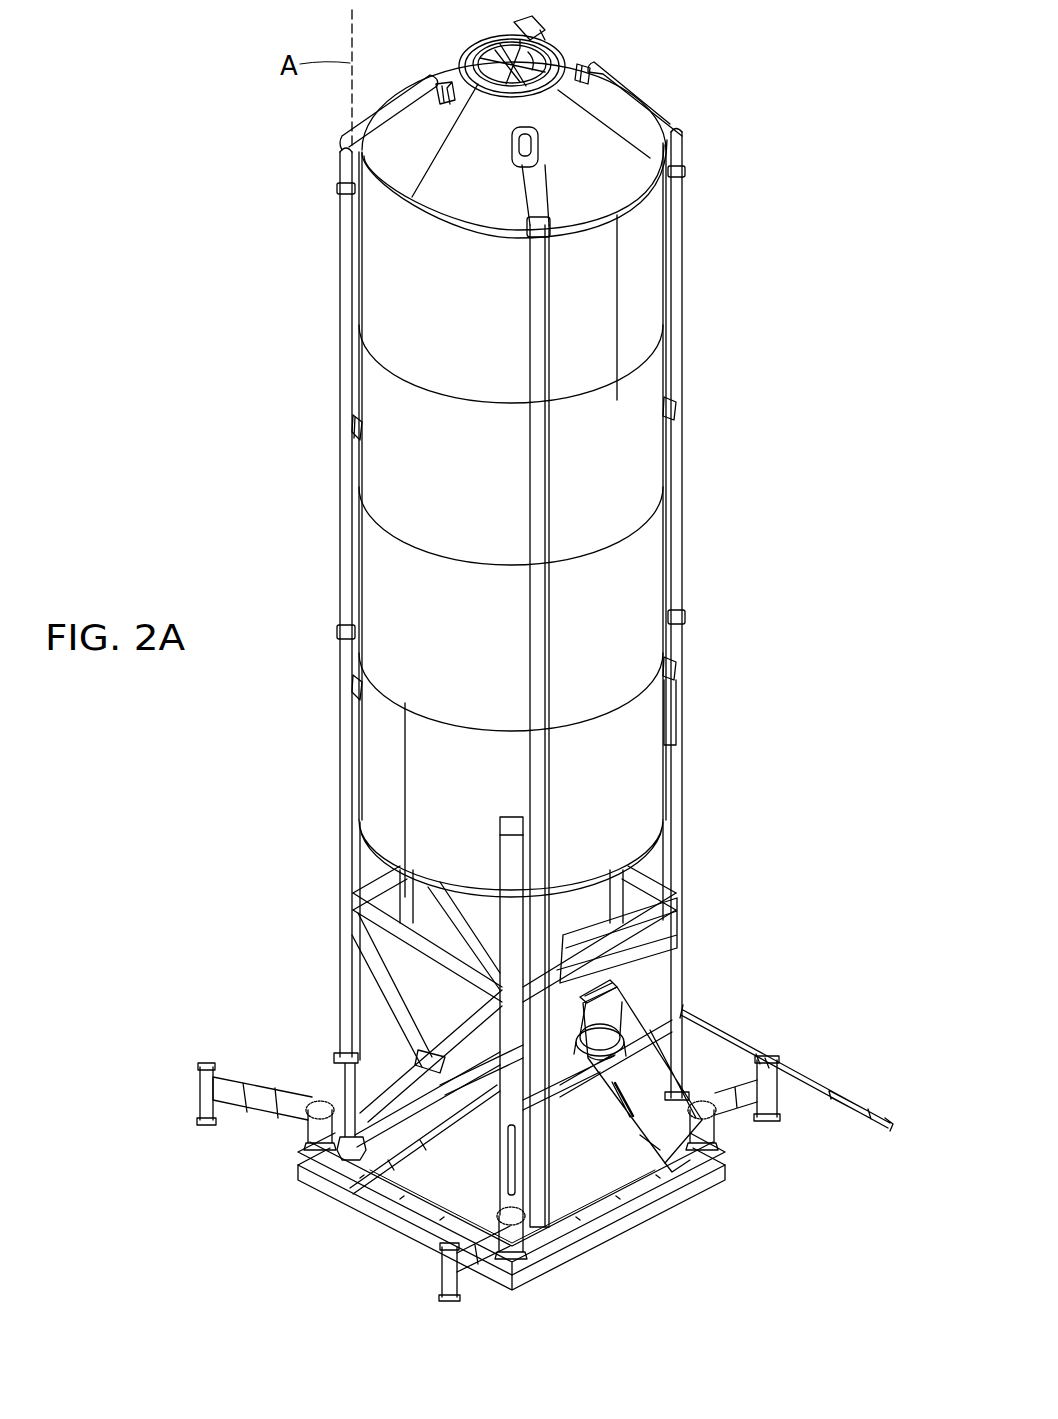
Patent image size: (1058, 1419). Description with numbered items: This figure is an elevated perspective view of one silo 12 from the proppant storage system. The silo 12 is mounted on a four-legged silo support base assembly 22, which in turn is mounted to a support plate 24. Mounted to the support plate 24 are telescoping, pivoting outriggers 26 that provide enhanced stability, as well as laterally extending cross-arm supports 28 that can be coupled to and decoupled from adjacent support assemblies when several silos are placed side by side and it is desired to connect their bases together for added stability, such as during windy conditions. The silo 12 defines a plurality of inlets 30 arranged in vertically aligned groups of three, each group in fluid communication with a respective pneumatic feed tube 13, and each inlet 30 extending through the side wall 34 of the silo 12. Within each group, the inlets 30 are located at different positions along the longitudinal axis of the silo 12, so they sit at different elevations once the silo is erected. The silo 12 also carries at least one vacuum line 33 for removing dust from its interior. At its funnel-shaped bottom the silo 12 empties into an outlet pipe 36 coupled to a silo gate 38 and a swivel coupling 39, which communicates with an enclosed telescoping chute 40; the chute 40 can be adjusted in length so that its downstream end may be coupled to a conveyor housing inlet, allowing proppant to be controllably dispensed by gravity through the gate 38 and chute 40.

The silo 12 is at (398, 266).
The pneumatic feed tube 13 is at (682, 468).
The silo support base assembly 22 is at (672, 918).
The support plate 24 is at (640, 1205).
The telescoping, pivoting outriggers 26 is at (262, 1098).
The cross-arm supports 28 is at (790, 1100).
The silo inlets 30 is at (440, 82).
The vacuum line 33 is at (540, 290).
The side wall 34 is at (392, 465).
The outlet pipe 36 is at (592, 1000).
The silo gate 38 is at (640, 888).
The swivel coupling 39 is at (622, 1030).
The telescoping chute 40 is at (678, 1142).